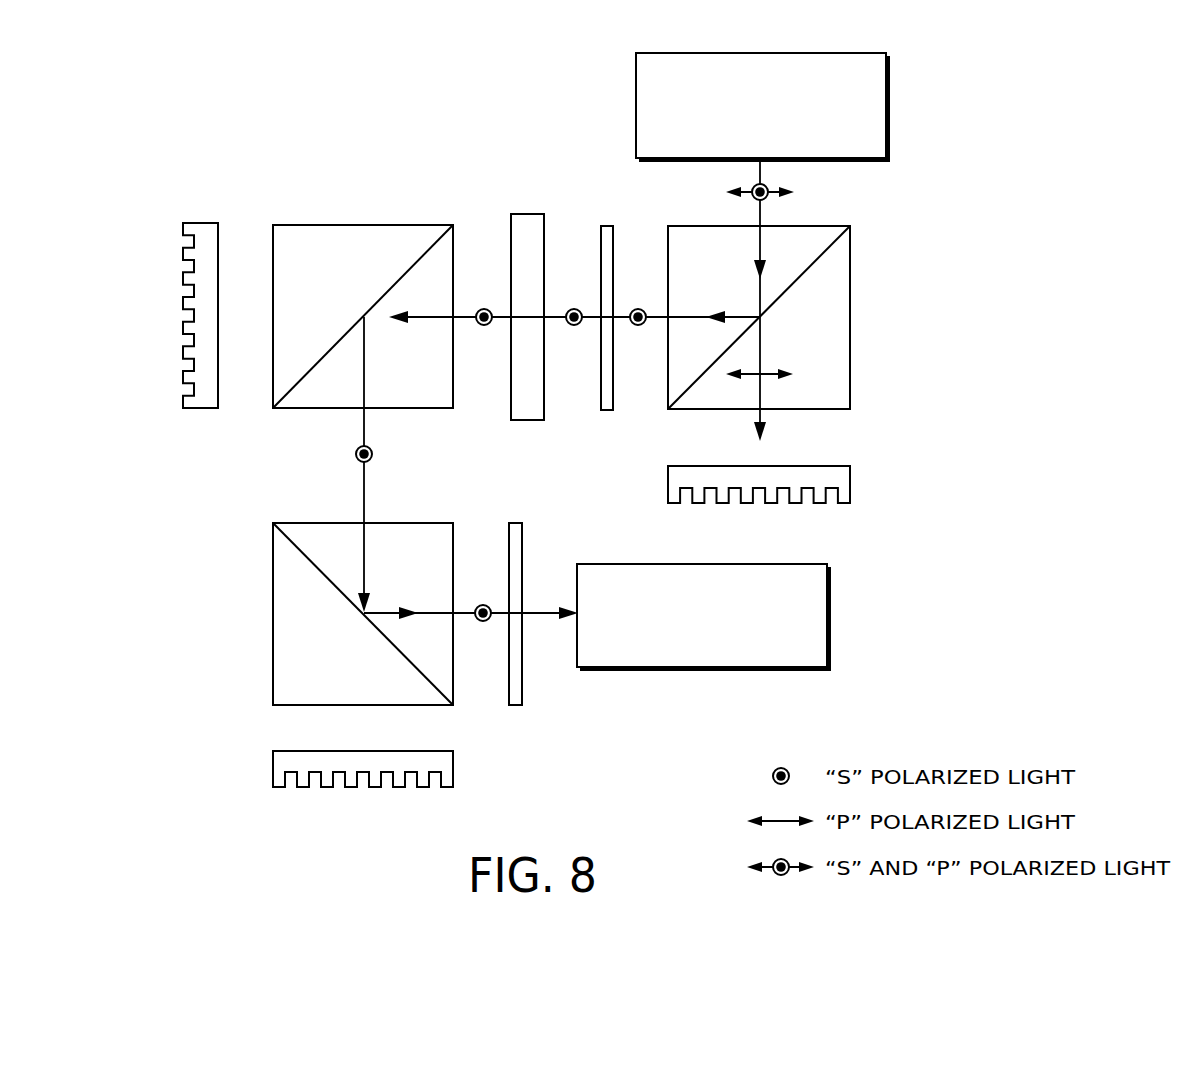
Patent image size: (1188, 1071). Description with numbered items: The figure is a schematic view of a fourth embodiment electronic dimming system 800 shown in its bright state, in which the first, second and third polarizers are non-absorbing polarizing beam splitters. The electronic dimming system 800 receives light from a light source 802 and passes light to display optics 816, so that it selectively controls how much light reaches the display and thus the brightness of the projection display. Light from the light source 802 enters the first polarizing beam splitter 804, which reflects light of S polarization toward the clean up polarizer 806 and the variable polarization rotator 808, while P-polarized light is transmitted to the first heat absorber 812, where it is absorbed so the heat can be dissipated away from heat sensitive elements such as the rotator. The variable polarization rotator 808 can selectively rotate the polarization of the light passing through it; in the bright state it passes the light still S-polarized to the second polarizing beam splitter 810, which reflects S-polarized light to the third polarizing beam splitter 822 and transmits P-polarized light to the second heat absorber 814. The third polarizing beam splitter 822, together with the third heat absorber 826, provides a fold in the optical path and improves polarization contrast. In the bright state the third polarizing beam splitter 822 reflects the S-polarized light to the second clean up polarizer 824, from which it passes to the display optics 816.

The electronic dimming system 800 is at (206, 722).
The light source 802 is at (784, 53).
The first polarizing beam splitter 804 is at (851, 306).
The clean up polarizer 806 is at (611, 226).
The variable polarization rotator 808 is at (527, 214).
The second polarizing beam splitter 810 is at (365, 225).
The first heat absorber 812 is at (851, 486).
The second heat absorber 814 is at (199, 223).
The display optics 816 is at (828, 640).
The third polarizing beam splitter 822 is at (300, 523).
The second clean up polarizer 824 is at (520, 523).
The third heat absorber 826 is at (454, 770).